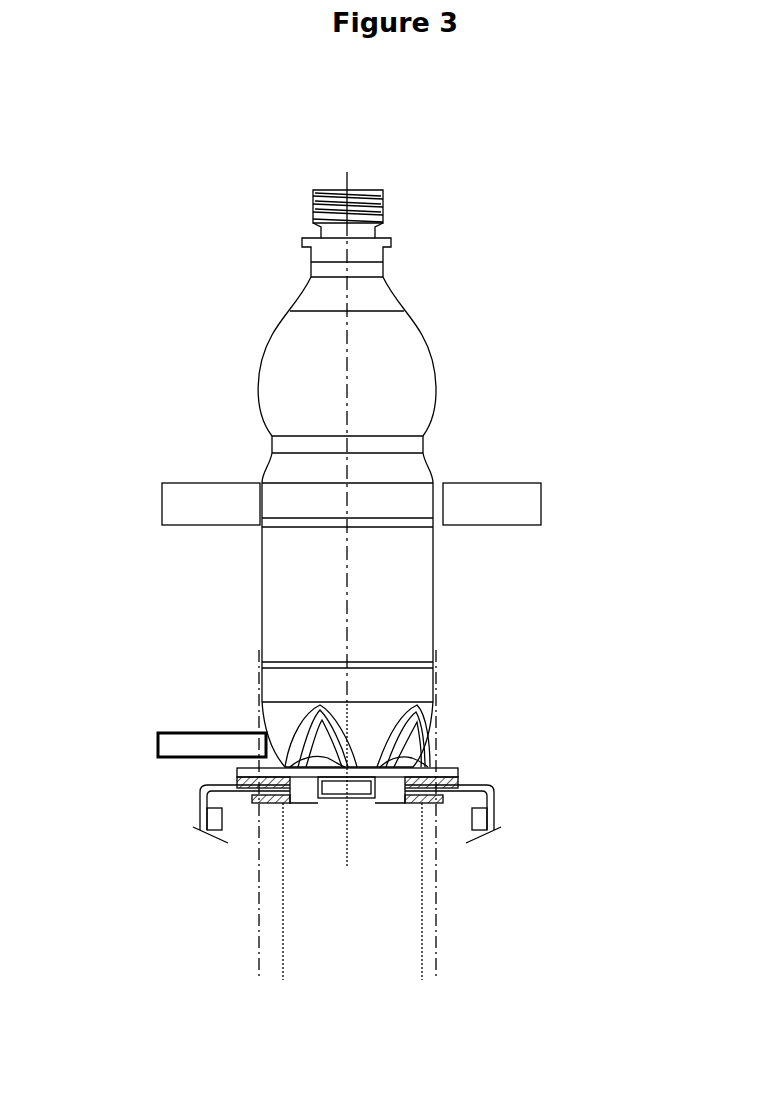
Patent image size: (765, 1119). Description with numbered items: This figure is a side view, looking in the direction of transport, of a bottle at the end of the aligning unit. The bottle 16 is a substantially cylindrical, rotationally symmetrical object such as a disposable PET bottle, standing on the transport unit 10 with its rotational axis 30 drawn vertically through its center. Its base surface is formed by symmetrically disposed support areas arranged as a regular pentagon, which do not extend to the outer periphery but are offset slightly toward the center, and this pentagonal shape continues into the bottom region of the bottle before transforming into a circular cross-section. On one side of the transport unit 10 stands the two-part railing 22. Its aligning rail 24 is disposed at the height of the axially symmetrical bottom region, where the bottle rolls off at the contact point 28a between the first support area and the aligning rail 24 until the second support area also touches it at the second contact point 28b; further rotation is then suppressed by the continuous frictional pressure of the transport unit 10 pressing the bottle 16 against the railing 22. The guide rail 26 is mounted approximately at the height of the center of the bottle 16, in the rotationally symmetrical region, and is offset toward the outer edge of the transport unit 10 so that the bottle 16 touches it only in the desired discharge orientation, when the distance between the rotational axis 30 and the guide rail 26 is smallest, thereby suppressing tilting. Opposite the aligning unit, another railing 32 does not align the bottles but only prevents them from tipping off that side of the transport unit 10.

The transport unit 10 is at (495, 813).
The object 16 is at (412, 367).
The two-part railing 22 is at (160, 620).
The aligning rail 24 is at (207, 740).
The guide rail 26 is at (212, 512).
The contact point 28a is at (262, 735).
The second contact point 28b is at (403, 736).
The rotational axis 30 is at (352, 175).
The railing 32 is at (513, 500).